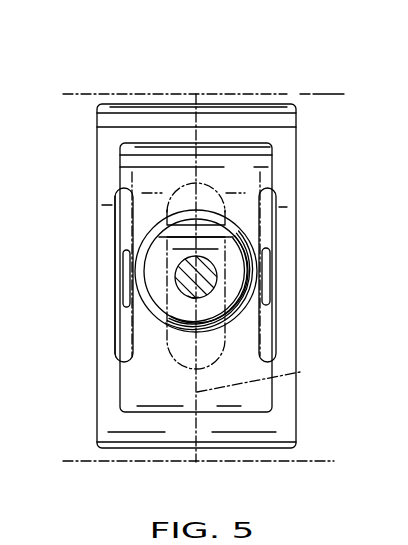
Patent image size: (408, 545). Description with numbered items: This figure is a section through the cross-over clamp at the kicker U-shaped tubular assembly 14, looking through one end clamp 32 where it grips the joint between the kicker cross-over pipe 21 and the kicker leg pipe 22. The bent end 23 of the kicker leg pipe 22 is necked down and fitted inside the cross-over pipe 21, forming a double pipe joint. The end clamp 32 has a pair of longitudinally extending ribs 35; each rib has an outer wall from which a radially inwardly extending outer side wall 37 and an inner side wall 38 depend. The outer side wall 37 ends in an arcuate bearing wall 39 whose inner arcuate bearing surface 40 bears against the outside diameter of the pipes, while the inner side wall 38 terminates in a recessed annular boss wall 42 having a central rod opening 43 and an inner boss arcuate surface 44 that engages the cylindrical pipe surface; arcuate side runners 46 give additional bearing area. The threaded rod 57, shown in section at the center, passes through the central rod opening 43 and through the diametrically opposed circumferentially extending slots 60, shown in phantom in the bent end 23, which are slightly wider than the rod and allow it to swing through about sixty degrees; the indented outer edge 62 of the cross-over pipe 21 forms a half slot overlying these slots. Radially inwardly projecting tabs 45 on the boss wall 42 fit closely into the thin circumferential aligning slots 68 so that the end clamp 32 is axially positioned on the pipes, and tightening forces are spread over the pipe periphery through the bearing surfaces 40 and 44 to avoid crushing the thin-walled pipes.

The kicker U-shaped tubular assembly 14 is at (289, 80).
The cross-over pipe 21 is at (86, 94).
The kicker leg pipe 22 is at (316, 93).
The bent end 23 is at (337, 95).
The end clamp 32 is at (297, 143).
The rib 35 is at (133, 178).
The outer side wall 37 is at (145, 145).
The inner side wall 38 is at (147, 316).
The bearing wall 39 is at (163, 120).
The inner arcuate bearing surface 40 is at (212, 122).
The boss wall 42 is at (232, 298).
The central rod opening 43 is at (190, 294).
The inner boss arcuate surface 44 is at (230, 257).
The tab 45 is at (122, 255).
The side runner 46 is at (286, 305).
The threaded rod 57 is at (180, 272).
The circumferentially extending slot 60 is at (205, 187).
The outer edge 62 is at (300, 372).
The aligning slot 68 is at (277, 200).